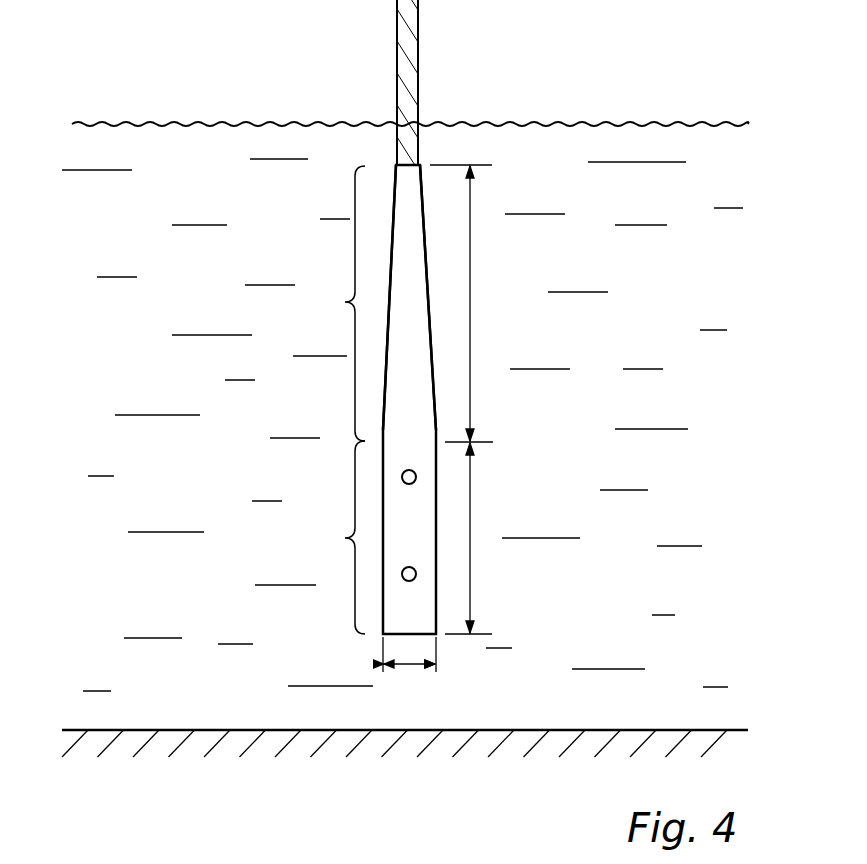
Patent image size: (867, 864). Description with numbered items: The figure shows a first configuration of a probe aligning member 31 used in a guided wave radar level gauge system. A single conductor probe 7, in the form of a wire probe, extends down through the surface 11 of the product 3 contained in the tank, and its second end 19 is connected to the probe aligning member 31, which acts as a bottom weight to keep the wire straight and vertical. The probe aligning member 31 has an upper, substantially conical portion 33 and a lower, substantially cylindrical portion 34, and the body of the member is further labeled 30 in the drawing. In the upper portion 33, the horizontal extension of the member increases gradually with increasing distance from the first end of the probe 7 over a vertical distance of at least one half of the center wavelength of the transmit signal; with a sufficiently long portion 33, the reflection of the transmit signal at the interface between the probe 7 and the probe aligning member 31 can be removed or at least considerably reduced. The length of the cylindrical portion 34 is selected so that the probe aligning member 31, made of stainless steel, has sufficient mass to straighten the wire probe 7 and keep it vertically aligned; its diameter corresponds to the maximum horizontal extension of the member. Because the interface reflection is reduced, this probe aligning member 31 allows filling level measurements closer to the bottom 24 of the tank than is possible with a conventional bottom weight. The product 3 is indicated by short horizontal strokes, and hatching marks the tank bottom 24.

The product 3 is at (204, 484).
The single conductor probe 7 is at (408, 47).
The surface 11 is at (268, 123).
The second end 19 is at (378, 157).
The bottom 24 is at (573, 730).
The anchor body 30 is at (407, 636).
The probe aligning member 31 is at (500, 446).
The upper substantially conical portion 33 is at (335, 303).
The lower substantially cylindrical portion 34 is at (332, 537).